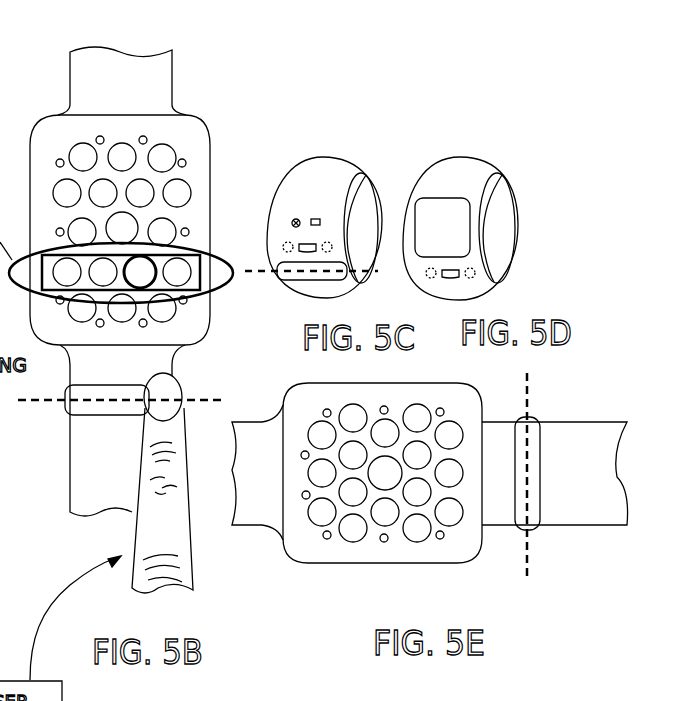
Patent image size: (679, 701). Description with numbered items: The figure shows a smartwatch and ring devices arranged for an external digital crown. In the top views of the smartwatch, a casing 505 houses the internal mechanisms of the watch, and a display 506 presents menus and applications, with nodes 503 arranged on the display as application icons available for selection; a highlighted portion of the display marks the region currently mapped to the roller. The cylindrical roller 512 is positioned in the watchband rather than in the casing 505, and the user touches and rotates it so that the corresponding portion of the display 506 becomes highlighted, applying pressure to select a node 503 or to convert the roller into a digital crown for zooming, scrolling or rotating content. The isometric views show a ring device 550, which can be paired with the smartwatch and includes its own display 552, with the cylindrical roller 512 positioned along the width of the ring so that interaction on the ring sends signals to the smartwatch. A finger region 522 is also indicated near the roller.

In FIG. 5B, the nodes 503 is at (138, 178).
In FIG. 5E, the nodes 503 is at (377, 527).
In FIG. 5B, the casing 505 is at (195, 118).
In FIG. 5B, the display 506 is at (60, 142).
In FIG. 5C, the cylindrical roller 512 is at (291, 277).
In FIG. 5E, the cylindrical roller 512 is at (522, 500).
In FIG. 5B, the finger contact region 522 is at (140, 413).
In FIG. 5D, the ring device 550 is at (462, 133).
In FIG. 5D, the display 552 is at (430, 222).